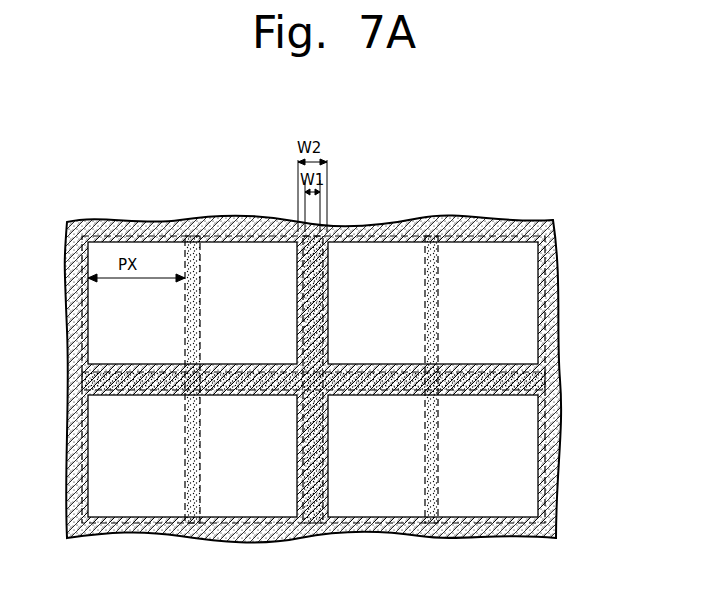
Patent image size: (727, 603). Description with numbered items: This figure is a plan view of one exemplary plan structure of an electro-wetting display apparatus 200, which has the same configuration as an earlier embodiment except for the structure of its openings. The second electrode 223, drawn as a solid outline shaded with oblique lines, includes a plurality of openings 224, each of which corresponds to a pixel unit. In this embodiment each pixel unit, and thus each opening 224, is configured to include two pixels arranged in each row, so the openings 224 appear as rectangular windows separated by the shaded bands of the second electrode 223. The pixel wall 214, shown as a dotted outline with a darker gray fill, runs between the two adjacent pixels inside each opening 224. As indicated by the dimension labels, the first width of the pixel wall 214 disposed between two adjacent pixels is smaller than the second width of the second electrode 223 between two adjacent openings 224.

The electro-wetting display apparatus 200 is at (345, 327).
The pixel wall 214 is at (313, 378).
The second electrode 223 is at (313, 379).
The openings 224 is at (515, 308).